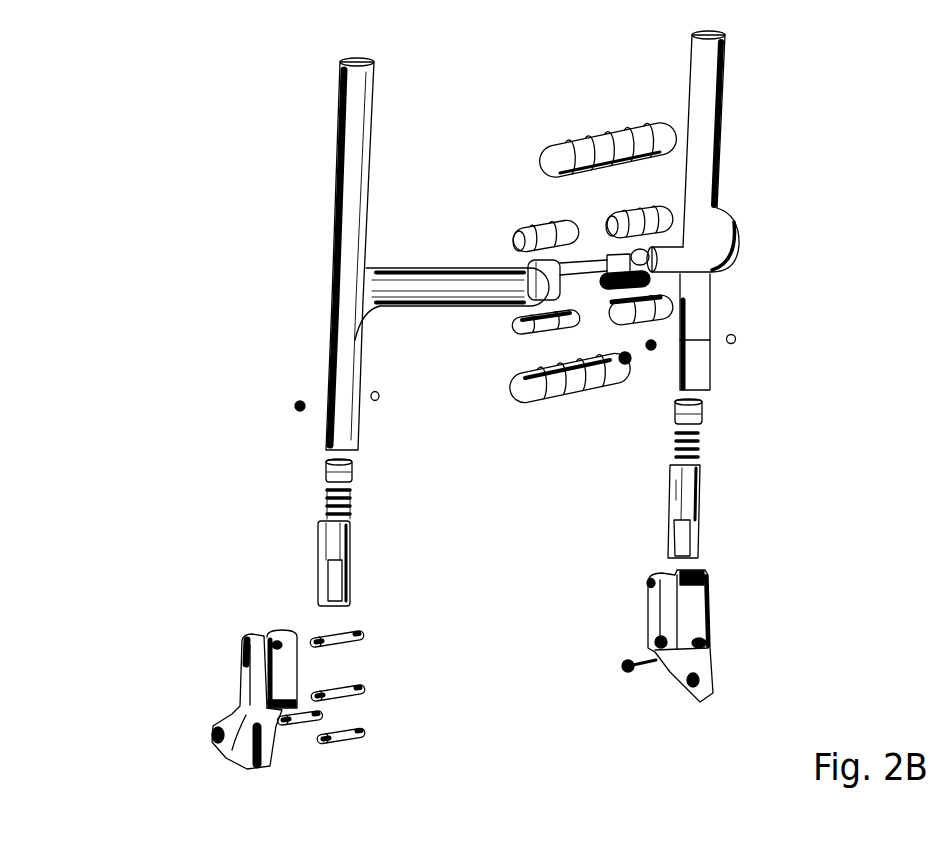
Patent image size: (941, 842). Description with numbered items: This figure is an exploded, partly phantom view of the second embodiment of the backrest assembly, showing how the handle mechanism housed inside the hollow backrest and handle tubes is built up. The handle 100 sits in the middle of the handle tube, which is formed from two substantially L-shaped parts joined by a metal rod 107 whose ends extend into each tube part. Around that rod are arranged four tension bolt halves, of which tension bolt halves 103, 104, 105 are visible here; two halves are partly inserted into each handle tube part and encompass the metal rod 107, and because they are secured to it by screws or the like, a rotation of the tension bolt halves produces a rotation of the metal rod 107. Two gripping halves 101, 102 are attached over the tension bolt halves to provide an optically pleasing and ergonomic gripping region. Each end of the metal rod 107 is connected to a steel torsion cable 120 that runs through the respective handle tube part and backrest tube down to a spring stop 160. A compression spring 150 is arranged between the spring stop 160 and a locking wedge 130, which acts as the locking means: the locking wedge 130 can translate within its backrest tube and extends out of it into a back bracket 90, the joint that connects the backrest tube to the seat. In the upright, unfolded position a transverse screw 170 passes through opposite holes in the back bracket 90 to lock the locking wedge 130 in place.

The back bracket 90 is at (212, 721).
The handle 100 is at (512, 328).
The gripping half 101 is at (580, 135).
The gripping half 102 is at (557, 405).
The tension bolt half 103 is at (683, 206).
The tension bolt half 104 is at (681, 300).
The tension bolt half 105 is at (528, 228).
The metal rod 107 is at (558, 264).
The steel torsion cable 120 is at (322, 433).
The locking wedge 130 is at (317, 535).
The compression spring 150 is at (327, 503).
The spring stop 160 is at (322, 468).
The transverse screw 170 is at (350, 695).